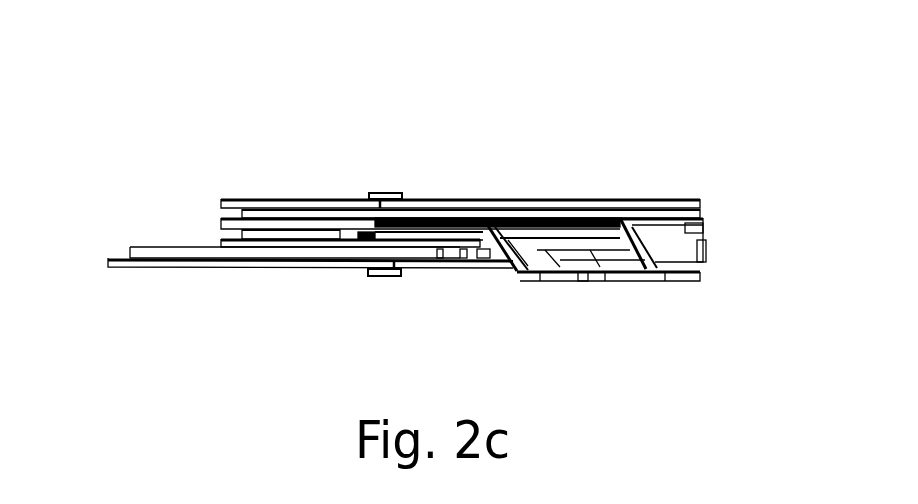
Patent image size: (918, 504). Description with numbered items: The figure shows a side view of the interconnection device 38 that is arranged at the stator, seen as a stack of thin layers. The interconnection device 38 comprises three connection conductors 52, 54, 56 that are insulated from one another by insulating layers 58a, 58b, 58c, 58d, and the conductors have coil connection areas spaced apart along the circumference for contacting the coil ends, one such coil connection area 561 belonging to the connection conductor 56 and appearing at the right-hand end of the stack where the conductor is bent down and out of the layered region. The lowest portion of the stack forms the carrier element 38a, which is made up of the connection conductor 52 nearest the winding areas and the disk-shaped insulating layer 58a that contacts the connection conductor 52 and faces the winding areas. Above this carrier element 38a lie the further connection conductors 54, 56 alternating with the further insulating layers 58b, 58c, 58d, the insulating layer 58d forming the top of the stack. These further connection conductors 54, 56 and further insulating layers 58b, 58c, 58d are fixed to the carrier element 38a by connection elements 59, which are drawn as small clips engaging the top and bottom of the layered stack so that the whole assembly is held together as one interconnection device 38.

The interconnection device 38 is at (516, 150).
The carrier element 38a is at (170, 167).
The connection conductor 52 is at (140, 247).
The connection conductor 54 is at (340, 233).
The connection conductor 56 is at (425, 213).
The insulating layer 58a is at (175, 262).
The insulating layer 58b is at (262, 242).
The insulating layer 58c is at (463, 227).
The insulating layer 58d is at (305, 207).
The connection element 59 is at (386, 194).
The coil connection area 561 is at (657, 243).